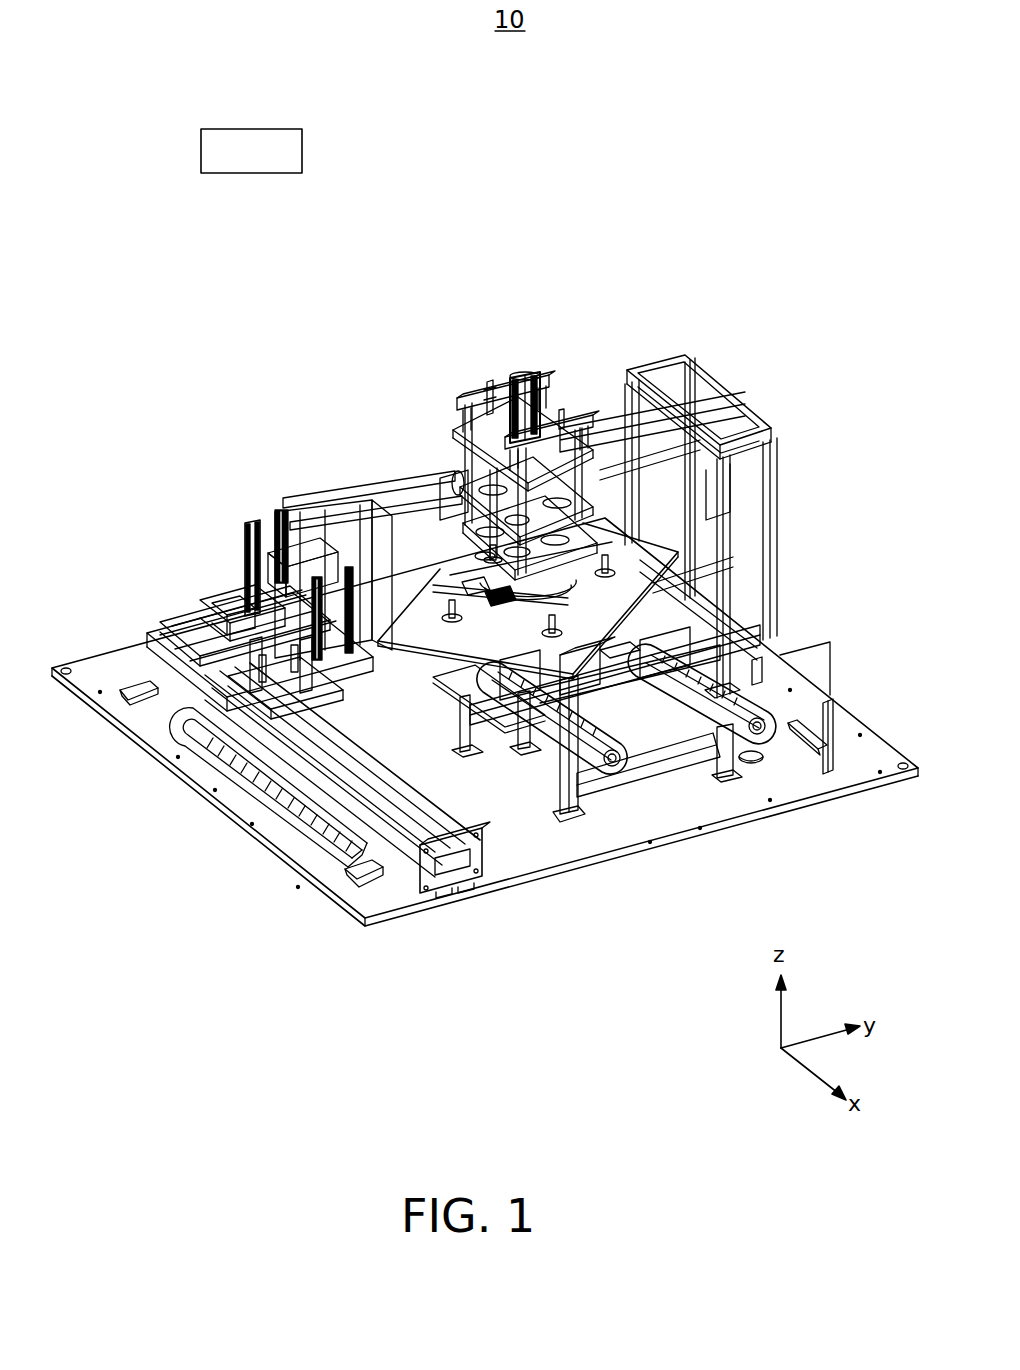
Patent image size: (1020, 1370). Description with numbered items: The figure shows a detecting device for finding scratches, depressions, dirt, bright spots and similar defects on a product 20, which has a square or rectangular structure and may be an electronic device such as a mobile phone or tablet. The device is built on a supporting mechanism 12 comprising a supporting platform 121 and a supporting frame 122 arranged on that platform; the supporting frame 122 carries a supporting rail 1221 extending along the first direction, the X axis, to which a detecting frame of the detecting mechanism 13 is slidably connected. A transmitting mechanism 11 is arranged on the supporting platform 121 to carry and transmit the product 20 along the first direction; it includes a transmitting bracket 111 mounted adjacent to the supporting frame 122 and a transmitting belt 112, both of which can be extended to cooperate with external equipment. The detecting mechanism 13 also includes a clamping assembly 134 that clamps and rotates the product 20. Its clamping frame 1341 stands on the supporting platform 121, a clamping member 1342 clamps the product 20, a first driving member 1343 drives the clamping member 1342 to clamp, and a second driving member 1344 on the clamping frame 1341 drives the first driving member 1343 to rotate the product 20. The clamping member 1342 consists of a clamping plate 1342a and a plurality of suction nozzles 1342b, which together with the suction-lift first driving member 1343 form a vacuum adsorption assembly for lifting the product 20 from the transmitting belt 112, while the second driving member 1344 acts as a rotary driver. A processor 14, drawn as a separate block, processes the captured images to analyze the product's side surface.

The transmitting mechanism 11 is at (728, 905).
The transmitting bracket 111 is at (577, 787).
The transmitting belt 112 is at (730, 717).
The supporting mechanism 12 is at (80, 758).
The supporting platform 121 is at (172, 745).
The supporting frame 122 is at (398, 812).
The supporting rail 1221 is at (420, 860).
The detecting mechanism 13 is at (203, 574).
The clamping assembly 134 is at (723, 278).
The clamping frame 1341 is at (612, 438).
The clamping member 1342 is at (472, 330).
The clamping plate 1342a is at (383, 640).
The suction nozzles 1342b is at (400, 638).
The first driving member 1343 is at (677, 360).
The second driving member 1344 is at (520, 378).
The processor 14 is at (302, 148).
The product 20 is at (413, 642).